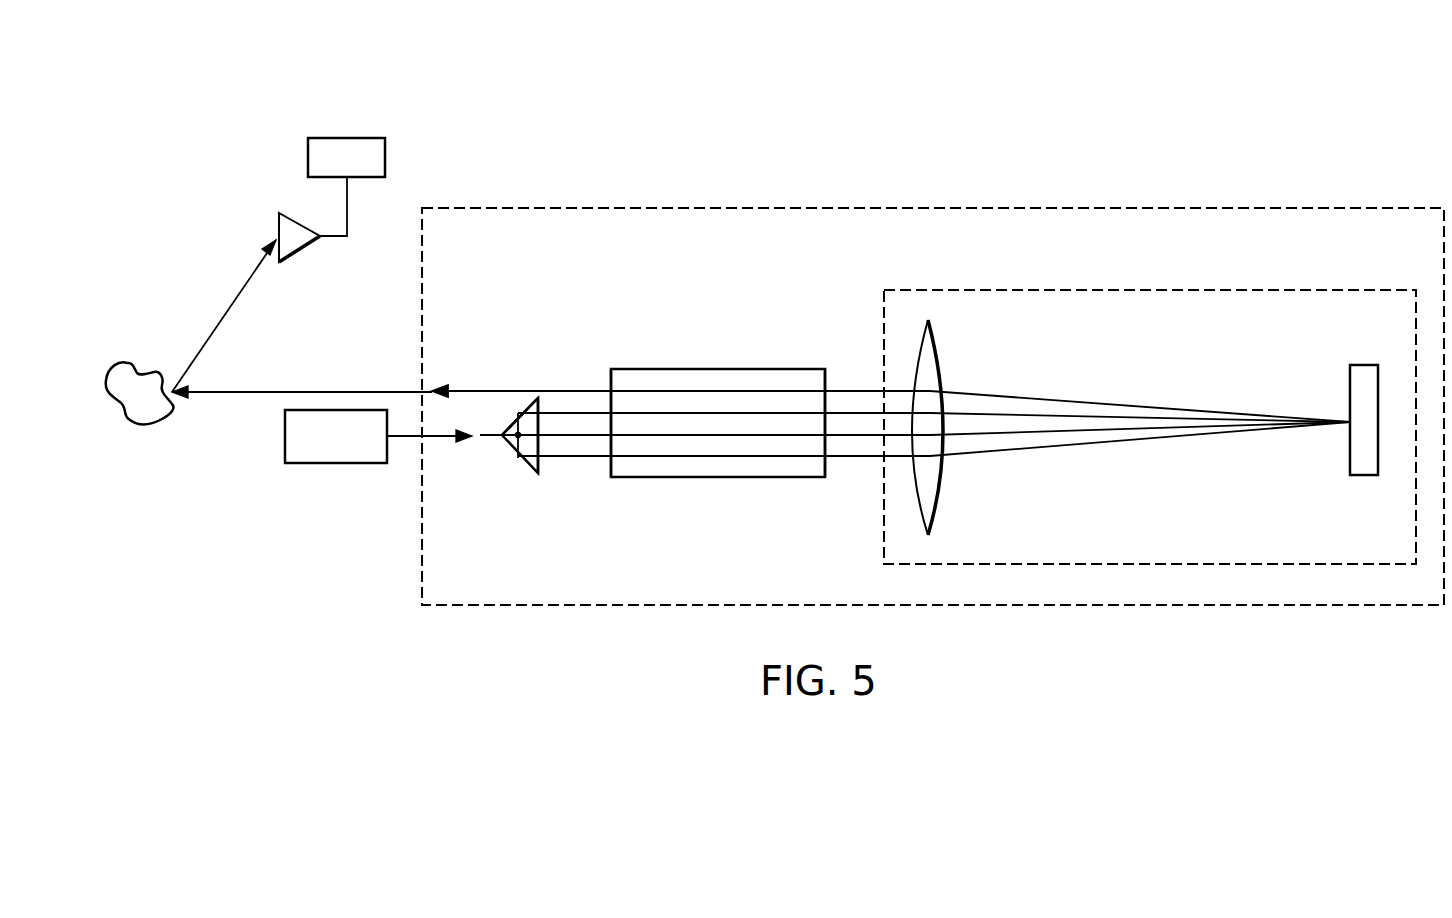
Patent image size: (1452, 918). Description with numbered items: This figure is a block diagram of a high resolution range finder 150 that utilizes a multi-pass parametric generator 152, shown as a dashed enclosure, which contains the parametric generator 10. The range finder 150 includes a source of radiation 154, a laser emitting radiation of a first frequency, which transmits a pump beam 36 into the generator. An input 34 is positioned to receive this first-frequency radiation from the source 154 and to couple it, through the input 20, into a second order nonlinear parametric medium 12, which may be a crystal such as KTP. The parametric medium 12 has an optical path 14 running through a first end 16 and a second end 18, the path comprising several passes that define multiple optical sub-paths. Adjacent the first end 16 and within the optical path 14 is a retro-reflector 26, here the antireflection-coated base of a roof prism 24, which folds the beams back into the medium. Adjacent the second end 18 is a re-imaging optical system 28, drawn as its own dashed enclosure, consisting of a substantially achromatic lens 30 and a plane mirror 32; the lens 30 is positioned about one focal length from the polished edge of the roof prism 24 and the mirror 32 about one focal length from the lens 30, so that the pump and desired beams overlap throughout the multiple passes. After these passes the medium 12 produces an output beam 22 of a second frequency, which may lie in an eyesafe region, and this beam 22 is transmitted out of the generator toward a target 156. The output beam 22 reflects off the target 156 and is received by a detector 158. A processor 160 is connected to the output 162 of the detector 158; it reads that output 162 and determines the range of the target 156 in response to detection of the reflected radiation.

The parametric generator 10 is at (871, 259).
The second order nonlinear parametric medium 12 is at (666, 478).
The optical path 14 is at (745, 432).
The first end 16 is at (611, 463).
The second end 18 is at (828, 462).
The input 20 is at (500, 430).
The output beam 22 is at (588, 391).
The roof prism 24 is at (538, 478).
The retro-reflector 26 is at (544, 425).
The re-imaging optical system 28 is at (1249, 290).
The achromatic lens 30 is at (940, 472).
The plane mirror 32 is at (1350, 440).
The input 34 is at (503, 440).
The pump beam 36 is at (447, 437).
The high resolution range finder 150 is at (903, 174).
The multi-pass parametric generator 152 is at (1250, 208).
The source of radiation 154 is at (338, 464).
The target 156 is at (148, 428).
The detector 158 is at (300, 250).
The processor 160 is at (358, 137).
The output of the detector 162 is at (350, 219).